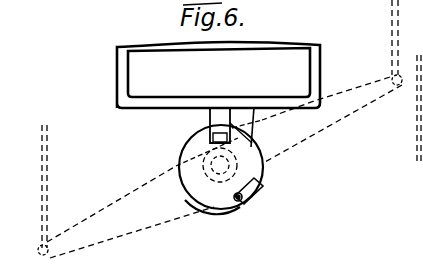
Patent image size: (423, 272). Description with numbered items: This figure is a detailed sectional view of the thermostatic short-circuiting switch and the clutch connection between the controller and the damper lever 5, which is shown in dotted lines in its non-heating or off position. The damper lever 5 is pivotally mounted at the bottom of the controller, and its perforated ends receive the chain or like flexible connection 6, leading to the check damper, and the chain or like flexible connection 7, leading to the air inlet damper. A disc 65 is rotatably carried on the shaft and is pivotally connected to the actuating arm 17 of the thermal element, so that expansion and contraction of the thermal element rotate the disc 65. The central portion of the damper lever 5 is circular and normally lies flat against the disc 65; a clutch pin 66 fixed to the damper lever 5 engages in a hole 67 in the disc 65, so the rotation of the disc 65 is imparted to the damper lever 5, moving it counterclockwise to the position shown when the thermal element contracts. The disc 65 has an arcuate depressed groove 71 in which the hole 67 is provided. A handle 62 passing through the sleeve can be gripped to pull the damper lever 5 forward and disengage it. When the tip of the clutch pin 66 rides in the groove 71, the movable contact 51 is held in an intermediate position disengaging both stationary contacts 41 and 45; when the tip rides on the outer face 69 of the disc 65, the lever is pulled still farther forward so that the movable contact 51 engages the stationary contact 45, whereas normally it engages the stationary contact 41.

The damper lever 5 is at (98, 228).
The chain or like flexible connection 6 is at (47, 172).
The chain or like flexible connection 7 is at (393, 33).
The actuating arm 17 is at (254, 112).
The stationary contact 41 is at (270, 145).
The stationary contact 45 is at (210, 120).
The movable contact 51 is at (257, 134).
The handle 62 is at (168, 191).
The disc 65 is at (179, 148).
The clutch pin 66 is at (237, 205).
The hole 67 is at (242, 204).
The outer face 69 is at (204, 200).
The depressed groove 71 is at (258, 197).